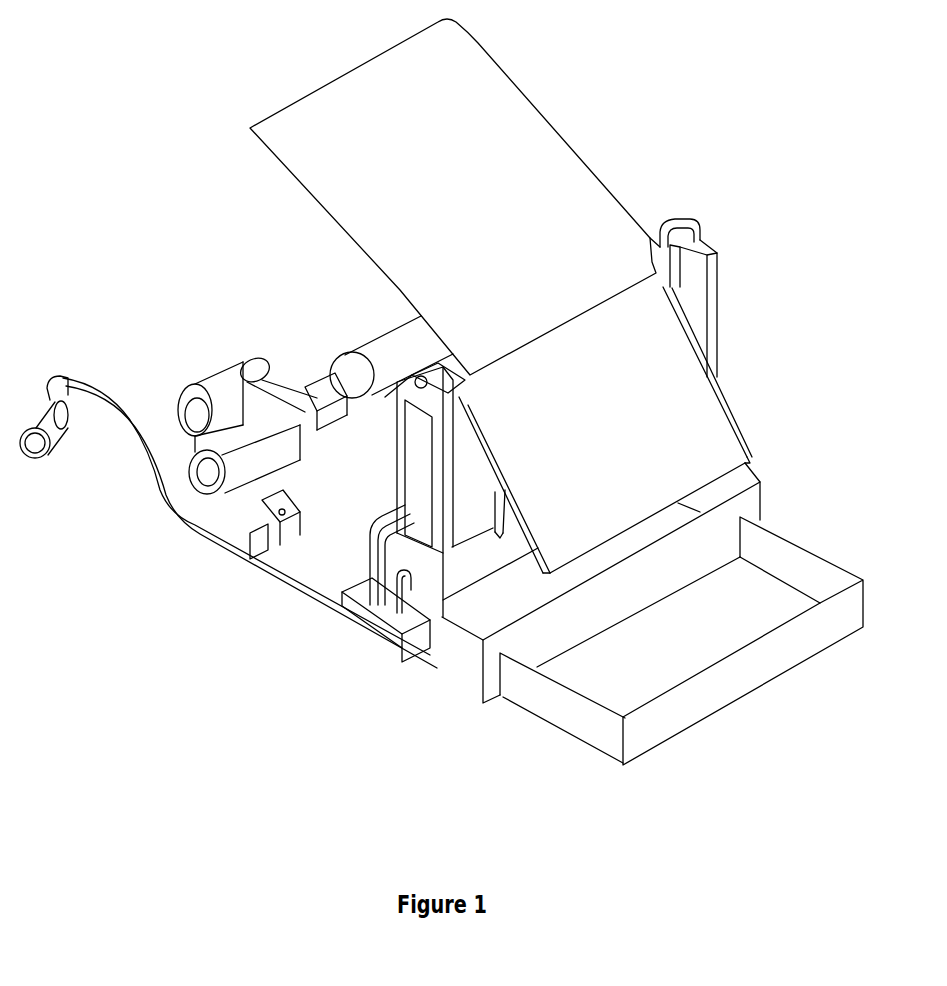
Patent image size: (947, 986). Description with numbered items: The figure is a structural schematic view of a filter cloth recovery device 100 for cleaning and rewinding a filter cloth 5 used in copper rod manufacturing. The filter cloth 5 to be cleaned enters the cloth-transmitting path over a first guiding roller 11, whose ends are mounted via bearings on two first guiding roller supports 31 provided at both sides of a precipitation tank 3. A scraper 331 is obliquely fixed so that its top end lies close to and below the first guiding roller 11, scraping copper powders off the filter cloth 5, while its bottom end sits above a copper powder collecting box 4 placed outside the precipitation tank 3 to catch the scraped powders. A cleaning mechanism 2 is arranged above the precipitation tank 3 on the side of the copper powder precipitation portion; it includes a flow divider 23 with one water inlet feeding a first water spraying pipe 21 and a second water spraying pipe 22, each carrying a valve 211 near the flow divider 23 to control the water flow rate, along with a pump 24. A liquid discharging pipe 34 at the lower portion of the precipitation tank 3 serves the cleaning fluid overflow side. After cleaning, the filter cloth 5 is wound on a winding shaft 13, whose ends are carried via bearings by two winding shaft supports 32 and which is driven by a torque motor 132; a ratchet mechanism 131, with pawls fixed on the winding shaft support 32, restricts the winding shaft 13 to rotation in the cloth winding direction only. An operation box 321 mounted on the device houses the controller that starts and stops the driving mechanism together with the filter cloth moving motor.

The filter cloth recovery device 100 is at (716, 74).
The filter cloth 5 is at (487, 155).
The first guiding roller 11 is at (672, 240).
The first guiding roller support 31 is at (693, 288).
The scraper 331 is at (700, 437).
The precipitation tank 3 is at (700, 505).
The copper powder collecting box 4 is at (693, 715).
The flow divider 23 is at (420, 650).
The winding shaft 13 is at (330, 385).
The ratchet mechanism 131 is at (300, 385).
The torque motor 132 is at (273, 448).
The pump 24 is at (77, 428).
The winding shaft support 32 is at (272, 557).
The operation box 321 is at (267, 507).
The liquid discharging pipe 34 is at (270, 535).
The valve 211 is at (335, 608).
The second water spraying pipe 22 is at (367, 602).
The first water spraying pipe 21 is at (401, 600).
The cleaning mechanism 2 is at (412, 745).